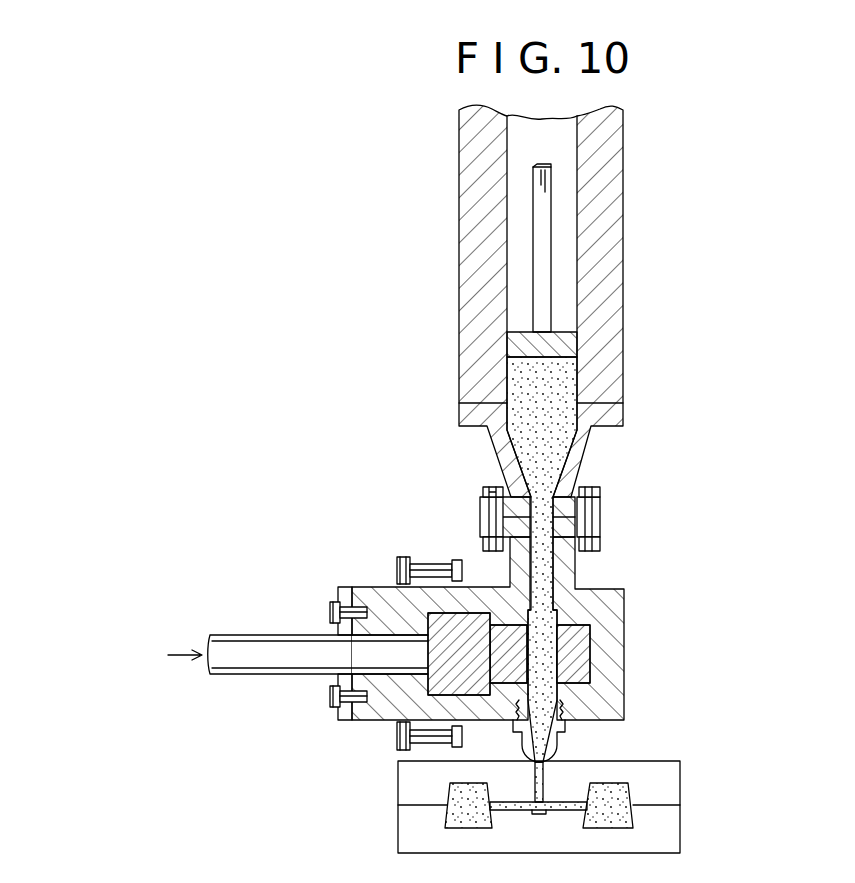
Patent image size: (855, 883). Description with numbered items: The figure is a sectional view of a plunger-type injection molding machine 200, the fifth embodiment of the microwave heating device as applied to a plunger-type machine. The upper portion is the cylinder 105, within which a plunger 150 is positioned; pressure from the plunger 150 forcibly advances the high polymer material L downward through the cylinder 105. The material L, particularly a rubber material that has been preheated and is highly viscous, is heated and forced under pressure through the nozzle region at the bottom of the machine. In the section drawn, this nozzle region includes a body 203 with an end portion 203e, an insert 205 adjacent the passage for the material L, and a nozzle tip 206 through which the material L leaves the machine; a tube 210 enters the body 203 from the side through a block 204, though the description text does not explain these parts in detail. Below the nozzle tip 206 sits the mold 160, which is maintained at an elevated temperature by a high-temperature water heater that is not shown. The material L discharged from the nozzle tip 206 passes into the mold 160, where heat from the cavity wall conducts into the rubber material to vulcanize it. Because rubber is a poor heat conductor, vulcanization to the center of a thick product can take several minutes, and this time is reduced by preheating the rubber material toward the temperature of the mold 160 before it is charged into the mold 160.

The plunger 150 is at (543, 257).
The cylinder 105 is at (620, 340).
The plunger-type injection molding machine 200 is at (633, 418).
The nozzle body 203 is at (490, 593).
The high polymer material L is at (542, 593).
The insert 205 is at (573, 640).
The nozzle body end portion 203e is at (602, 657).
The nozzle tip 206 is at (557, 693).
The supply tube 210 is at (355, 657).
The connecting block 204 is at (430, 683).
The mold 160 is at (668, 797).